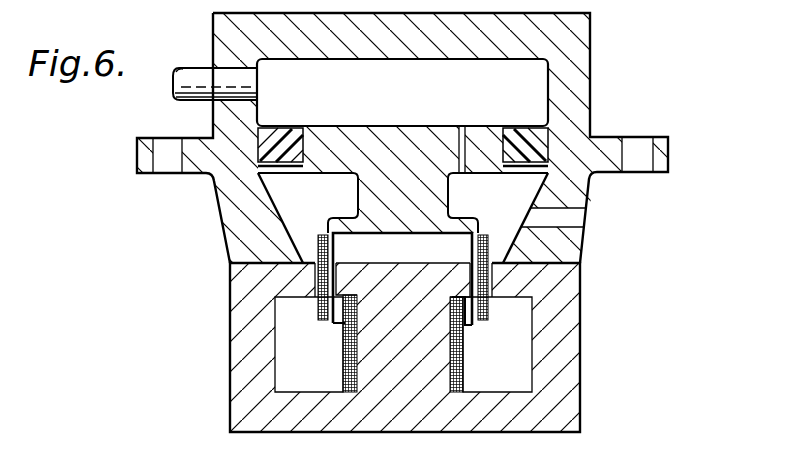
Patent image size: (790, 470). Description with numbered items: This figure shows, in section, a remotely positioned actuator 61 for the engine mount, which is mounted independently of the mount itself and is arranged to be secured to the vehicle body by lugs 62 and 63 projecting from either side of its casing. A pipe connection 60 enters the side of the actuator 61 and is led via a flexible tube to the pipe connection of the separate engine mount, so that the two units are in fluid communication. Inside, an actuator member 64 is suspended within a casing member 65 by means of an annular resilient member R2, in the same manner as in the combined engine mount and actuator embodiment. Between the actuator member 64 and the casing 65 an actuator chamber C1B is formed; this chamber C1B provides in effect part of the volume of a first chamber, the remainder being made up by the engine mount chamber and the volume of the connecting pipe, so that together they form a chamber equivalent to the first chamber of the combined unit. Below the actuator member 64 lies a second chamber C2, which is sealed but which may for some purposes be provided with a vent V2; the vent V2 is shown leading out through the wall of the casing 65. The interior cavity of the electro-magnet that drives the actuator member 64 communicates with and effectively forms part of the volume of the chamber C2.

The pipe connection 60 is at (193, 67).
The actuator 61 is at (598, 44).
The lug 62 is at (147, 166).
The lug 63 is at (663, 165).
The actuator member 64 is at (330, 157).
The casing member 65 is at (584, 97).
The actuator chamber C1B is at (424, 103).
The second chamber C2 is at (507, 210).
The vent V2 is at (463, 124).
The annular resilient member R2 is at (527, 134).